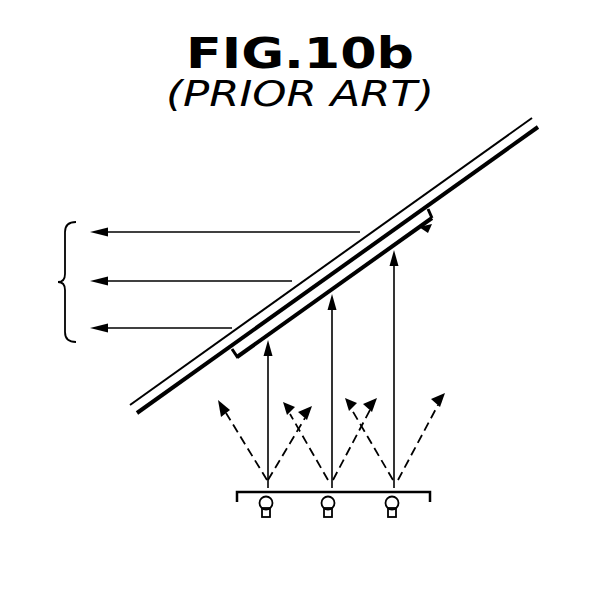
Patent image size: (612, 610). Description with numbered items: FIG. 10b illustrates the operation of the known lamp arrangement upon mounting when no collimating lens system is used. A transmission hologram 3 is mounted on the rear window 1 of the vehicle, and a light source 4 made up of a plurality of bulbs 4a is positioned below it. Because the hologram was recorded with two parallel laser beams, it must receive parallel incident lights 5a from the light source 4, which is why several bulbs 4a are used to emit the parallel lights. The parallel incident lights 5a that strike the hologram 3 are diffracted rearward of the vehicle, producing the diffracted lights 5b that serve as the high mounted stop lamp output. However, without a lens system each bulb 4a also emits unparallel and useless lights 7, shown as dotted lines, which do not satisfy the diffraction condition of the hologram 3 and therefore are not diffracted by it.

The rear window 1 is at (513, 142).
The transmission hologram 3 is at (430, 218).
The light source 4 is at (370, 493).
The bulb 4a is at (264, 518).
The incident lights 5a is at (270, 372).
The diffracted lights 5b is at (188, 282).
The unparallel and useless lights 7 is at (248, 450).